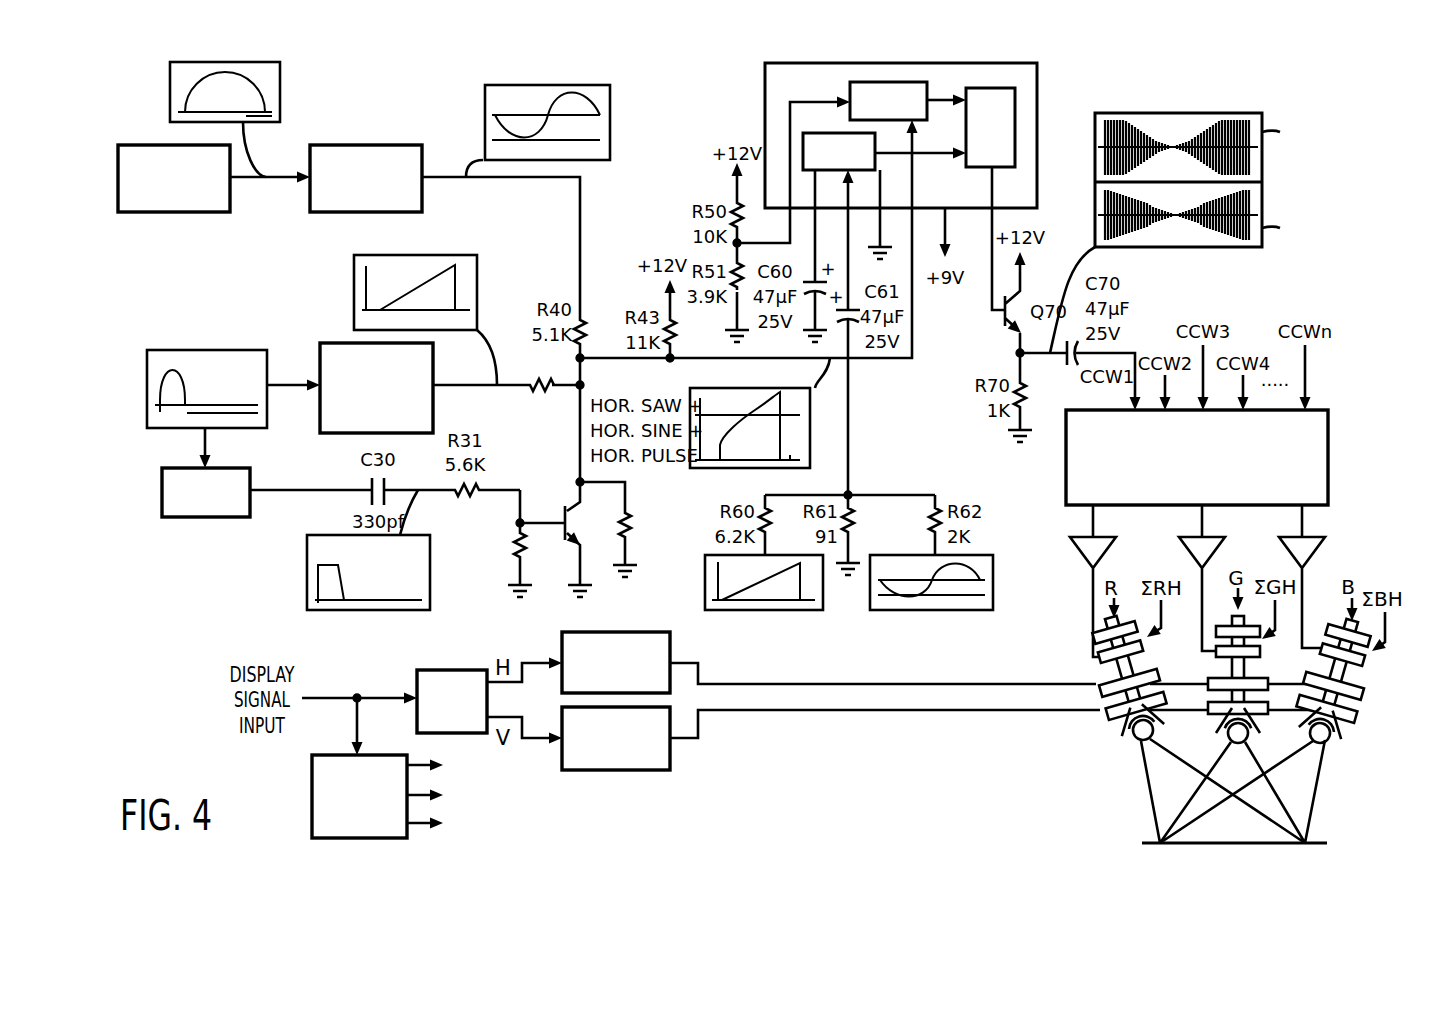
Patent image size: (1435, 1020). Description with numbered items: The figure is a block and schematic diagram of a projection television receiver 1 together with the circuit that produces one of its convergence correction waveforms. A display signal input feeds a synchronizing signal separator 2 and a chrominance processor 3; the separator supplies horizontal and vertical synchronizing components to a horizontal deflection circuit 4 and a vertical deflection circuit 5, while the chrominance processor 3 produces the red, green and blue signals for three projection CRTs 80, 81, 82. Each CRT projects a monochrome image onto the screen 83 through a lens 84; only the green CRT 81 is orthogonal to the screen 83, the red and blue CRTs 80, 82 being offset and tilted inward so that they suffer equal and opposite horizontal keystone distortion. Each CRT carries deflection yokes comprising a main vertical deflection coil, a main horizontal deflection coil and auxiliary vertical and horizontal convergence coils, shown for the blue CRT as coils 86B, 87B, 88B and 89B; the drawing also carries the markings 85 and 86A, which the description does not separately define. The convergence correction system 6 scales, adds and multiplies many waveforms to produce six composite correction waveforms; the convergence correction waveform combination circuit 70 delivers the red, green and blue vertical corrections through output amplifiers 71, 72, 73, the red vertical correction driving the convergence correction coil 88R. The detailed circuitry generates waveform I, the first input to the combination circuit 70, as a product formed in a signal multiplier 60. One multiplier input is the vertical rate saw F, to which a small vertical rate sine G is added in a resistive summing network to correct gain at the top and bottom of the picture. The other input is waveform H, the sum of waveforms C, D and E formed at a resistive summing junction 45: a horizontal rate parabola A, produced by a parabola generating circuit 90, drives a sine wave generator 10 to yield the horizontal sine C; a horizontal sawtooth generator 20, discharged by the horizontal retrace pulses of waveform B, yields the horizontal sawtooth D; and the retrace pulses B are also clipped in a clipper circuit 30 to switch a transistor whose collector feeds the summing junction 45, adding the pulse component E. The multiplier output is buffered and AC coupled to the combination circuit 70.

The projection television receiver 1 is at (550, 785).
The synchronizing signal separator 2 is at (417, 672).
The chrominance processor 3 is at (312, 800).
The horizontal deflection circuit 4 is at (622, 632).
The vertical deflection circuit 5 is at (620, 770).
The convergence correction system 6 is at (535, 489).
The sine wave generator 10 is at (379, 145).
The horizontal sawtooth generator 20 is at (433, 358).
The clipper circuit 30 is at (200, 518).
The resistive summing junction 45 is at (577, 385).
The signal multiplier 60 is at (765, 76).
The convergence correction waveform combination circuit 70 is at (1066, 478).
The output amplifier 71 is at (1070, 539).
The output amplifier 72 is at (1179, 539).
The output amplifier 73 is at (1279, 539).
The red projection CRT 80 is at (1122, 722).
The green projection CRT 81 is at (1219, 714).
The blue projection CRT 82 is at (1342, 727).
The screen 83 is at (1152, 748).
The lens 84 is at (1248, 746).
The blue electron gun 85 is at (1311, 748).
The green deflection yoke 86A is at (1254, 710).
The main vertical deflection coil 86B is at (1352, 718).
The main horizontal deflection coil 87B is at (1357, 696).
The auxiliary vertical deflection coil 88B is at (1362, 673).
The convergence correction coil 88R is at (1094, 672).
The auxiliary horizontal deflection coil 89B is at (1370, 650).
The horizontal rate parabola generating circuit 90 is at (136, 145).
The horizontal rate parabola waveform A is at (281, 86).
The horizontal retrace pulse waveform B is at (267, 361).
The horizontal sine waveform C is at (485, 116).
The horizontal sawtooth waveform D is at (354, 263).
The pulse component waveform E is at (307, 545).
The vertical rate saw waveform F is at (705, 582).
The vertical rate sine waveform G is at (993, 585).
The summed horizontal waveform H is at (810, 430).
The convergence correction waveform I is at (1170, 113).